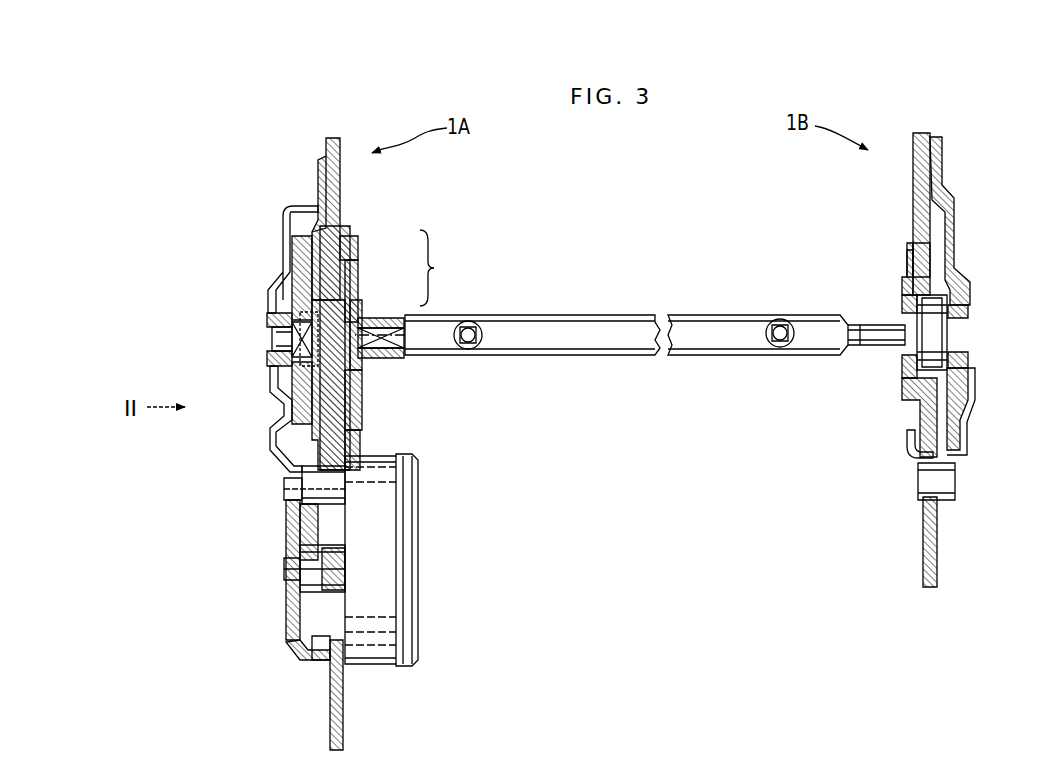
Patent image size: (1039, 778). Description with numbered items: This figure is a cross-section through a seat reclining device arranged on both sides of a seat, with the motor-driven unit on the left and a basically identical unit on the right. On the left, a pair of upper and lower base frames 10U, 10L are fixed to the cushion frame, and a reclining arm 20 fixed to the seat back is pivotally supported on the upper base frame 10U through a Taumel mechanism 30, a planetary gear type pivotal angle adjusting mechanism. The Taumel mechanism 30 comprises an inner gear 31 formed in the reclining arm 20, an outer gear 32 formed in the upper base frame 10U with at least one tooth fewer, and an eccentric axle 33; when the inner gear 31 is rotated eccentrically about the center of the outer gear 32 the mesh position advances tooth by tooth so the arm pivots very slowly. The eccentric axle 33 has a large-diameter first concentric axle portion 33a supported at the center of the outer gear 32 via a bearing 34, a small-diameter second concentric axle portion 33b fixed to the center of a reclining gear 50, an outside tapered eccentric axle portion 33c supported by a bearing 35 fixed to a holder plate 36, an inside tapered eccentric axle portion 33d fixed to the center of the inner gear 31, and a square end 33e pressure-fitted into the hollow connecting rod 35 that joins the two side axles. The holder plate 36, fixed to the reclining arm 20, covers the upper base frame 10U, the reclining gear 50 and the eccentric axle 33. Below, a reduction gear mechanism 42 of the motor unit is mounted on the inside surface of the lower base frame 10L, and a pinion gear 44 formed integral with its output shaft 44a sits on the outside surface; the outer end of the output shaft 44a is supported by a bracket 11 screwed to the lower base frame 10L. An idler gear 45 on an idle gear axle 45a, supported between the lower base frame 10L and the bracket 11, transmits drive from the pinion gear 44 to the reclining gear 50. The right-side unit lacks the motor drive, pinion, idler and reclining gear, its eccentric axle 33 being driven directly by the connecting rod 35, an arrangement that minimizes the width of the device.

The reclining arm 20 is at (340, 172).
The upper base frame 10U is at (336, 238).
The lower base frame 10L is at (343, 716).
The bracket 11 is at (286, 542).
The Taumel mechanism 30 is at (509, 268).
The inner gear 31 is at (355, 244).
The outer gear 32 is at (356, 268).
The eccentric axle 33 is at (355, 310).
The first concentric axle portion 33a is at (352, 372).
The second concentric axle portion 33b is at (275, 358).
The outside tapered eccentric axle portion 33c is at (275, 338).
The inside tapered eccentric axle portion 33d is at (360, 352).
The square end 33e is at (390, 318).
The bearing 34 is at (352, 390).
The bearing / connecting rod 35 is at (270, 316).
The holder plate 36 is at (300, 210).
The reduction gear mechanism 42 is at (412, 538).
The pinion gear 44 is at (300, 574).
The output shaft 44a is at (340, 560).
The idler gear 45 is at (290, 470).
The idle gear axle 45a is at (288, 490).
The reclining gear 50 is at (292, 250).